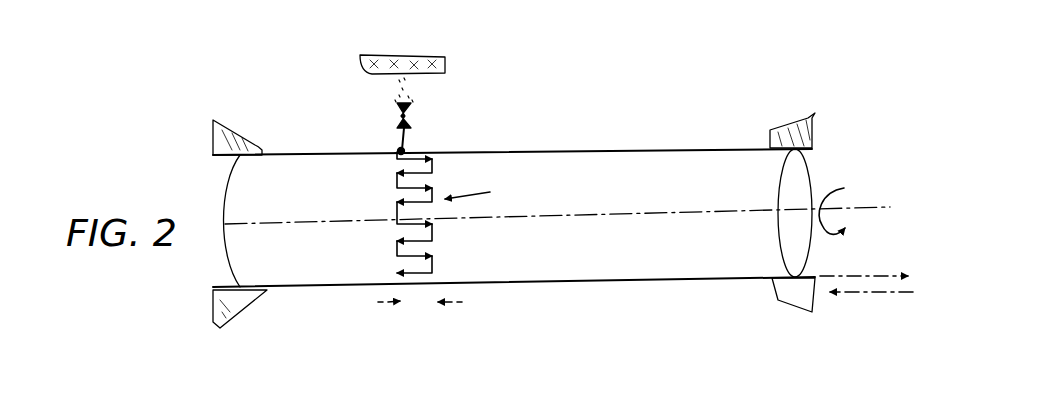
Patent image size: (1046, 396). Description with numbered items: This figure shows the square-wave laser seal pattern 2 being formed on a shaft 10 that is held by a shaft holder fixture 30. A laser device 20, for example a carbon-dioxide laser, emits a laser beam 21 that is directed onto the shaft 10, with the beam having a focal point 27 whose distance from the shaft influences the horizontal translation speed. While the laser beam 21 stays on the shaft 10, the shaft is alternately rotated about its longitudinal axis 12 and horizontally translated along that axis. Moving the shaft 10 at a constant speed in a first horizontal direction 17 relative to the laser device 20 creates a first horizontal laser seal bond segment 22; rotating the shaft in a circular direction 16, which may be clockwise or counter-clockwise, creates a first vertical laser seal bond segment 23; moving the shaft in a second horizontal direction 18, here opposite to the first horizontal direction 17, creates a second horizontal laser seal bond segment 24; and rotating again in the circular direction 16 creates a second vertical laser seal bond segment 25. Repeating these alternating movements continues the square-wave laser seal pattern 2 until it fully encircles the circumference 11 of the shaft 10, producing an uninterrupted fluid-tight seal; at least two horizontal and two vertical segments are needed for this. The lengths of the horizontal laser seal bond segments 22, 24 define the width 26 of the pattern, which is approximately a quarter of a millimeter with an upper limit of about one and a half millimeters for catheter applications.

The square-wave laser seal pattern 2 is at (478, 194).
The shaft 10 is at (620, 146).
The circumference 11 is at (805, 153).
The longitudinal axis 12 is at (697, 210).
The circular direction 16 is at (840, 202).
The first horizontal direction 17 is at (871, 310).
The second horizontal direction 18 is at (864, 264).
The laser device 20 is at (447, 62).
The laser beam 21 is at (413, 100).
The first horizontal laser seal bond segment 22 is at (420, 153).
The first vertical laser seal bond segment 23 is at (395, 154).
The second horizontal laser seal bond segment 24 is at (396, 176).
The second vertical laser seal bond segment 25 is at (436, 165).
The width 26 is at (410, 302).
The focal point 27 is at (396, 118).
The shaft holder fixture 30 is at (248, 142).